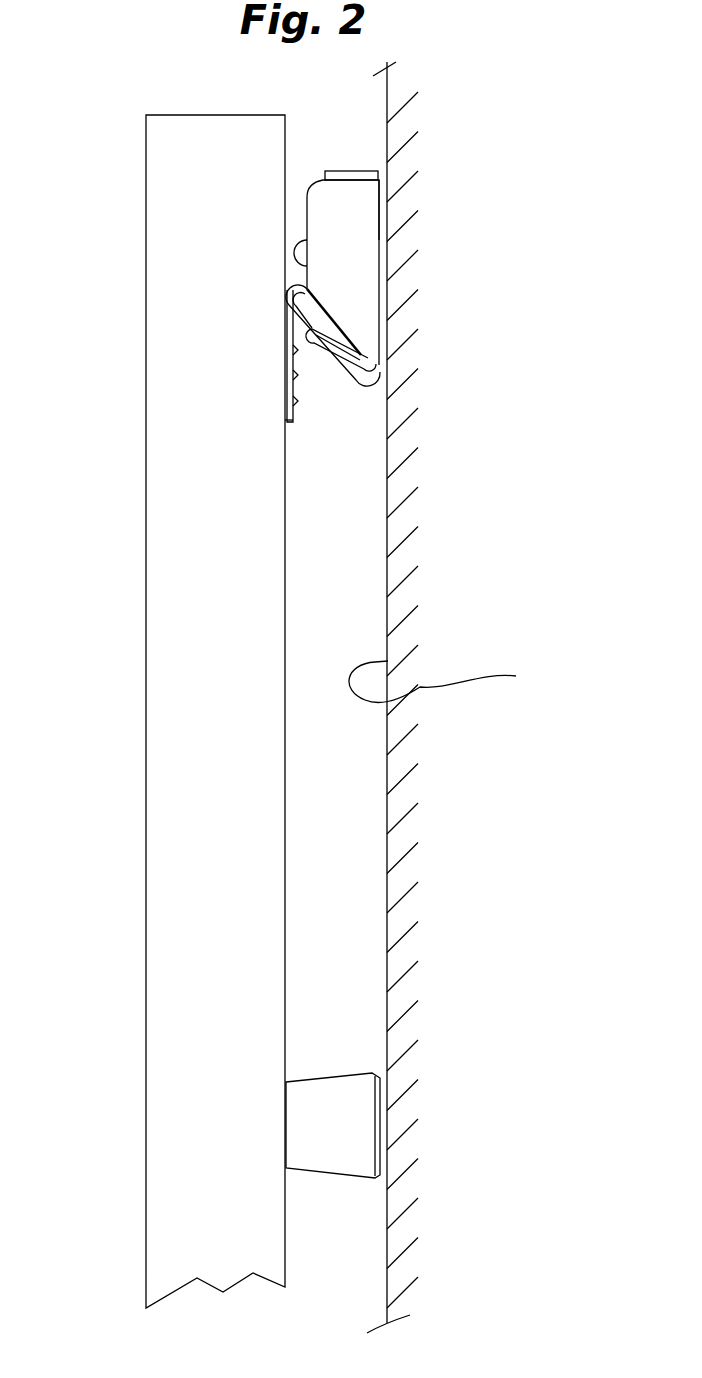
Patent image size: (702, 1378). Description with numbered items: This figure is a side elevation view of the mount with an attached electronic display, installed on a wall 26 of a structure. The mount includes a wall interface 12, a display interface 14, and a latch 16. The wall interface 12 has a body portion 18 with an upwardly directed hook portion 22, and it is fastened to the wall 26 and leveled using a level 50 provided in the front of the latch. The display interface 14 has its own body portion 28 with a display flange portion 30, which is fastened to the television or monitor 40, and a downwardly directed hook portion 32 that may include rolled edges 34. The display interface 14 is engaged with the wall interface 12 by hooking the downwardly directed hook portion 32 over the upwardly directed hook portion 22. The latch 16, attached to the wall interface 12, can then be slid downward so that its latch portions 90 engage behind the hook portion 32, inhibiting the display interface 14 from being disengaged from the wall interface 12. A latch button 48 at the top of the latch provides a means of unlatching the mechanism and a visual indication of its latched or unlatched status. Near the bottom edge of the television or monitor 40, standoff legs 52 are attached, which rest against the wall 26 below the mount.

The wall interface 12 is at (388, 243).
The display interface 14 is at (283, 372).
The latch 16 is at (380, 182).
The body portion 18 is at (388, 270).
The upwardly directed hook portion 22 is at (330, 350).
The wall 26 is at (449, 681).
The body portion 28 is at (287, 335).
The display flange portion 30 is at (283, 417).
The downwardly directed hook portion 32 is at (333, 325).
The rolled edges 34 is at (362, 354).
The television or monitor 40 is at (222, 849).
The latch button 48 is at (350, 170).
The level 50 is at (295, 253).
The standoff legs 52 is at (348, 1086).
The latch portions 90 is at (353, 328).